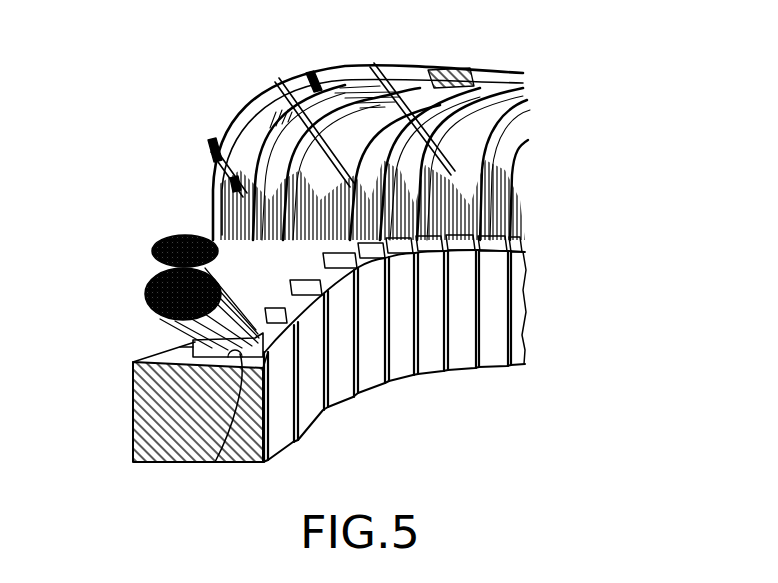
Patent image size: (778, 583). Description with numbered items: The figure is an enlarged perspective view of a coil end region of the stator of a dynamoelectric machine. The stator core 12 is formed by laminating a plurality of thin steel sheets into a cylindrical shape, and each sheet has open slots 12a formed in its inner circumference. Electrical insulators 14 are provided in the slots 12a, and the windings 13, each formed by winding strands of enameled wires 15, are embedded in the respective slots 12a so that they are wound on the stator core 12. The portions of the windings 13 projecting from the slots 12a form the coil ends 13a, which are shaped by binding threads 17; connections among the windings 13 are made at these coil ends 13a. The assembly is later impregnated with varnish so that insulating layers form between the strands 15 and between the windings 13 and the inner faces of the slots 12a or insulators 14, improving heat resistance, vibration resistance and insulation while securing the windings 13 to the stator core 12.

The stator core 12 is at (143, 440).
The open slots 12a is at (215, 462).
The windings 13 is at (217, 193).
The coil ends 13a is at (523, 112).
The insulators 14 is at (200, 350).
The enameled wires 15 is at (153, 243).
The binding threads 17 is at (412, 92).